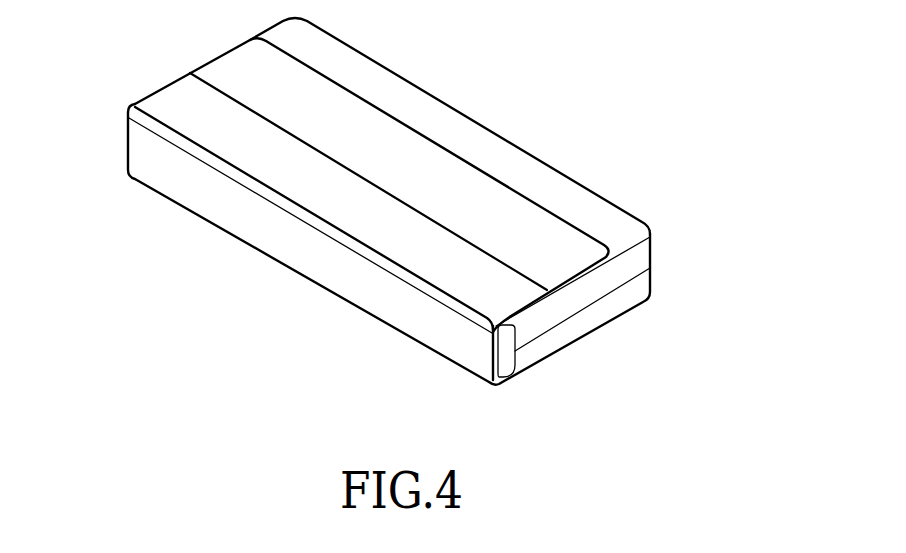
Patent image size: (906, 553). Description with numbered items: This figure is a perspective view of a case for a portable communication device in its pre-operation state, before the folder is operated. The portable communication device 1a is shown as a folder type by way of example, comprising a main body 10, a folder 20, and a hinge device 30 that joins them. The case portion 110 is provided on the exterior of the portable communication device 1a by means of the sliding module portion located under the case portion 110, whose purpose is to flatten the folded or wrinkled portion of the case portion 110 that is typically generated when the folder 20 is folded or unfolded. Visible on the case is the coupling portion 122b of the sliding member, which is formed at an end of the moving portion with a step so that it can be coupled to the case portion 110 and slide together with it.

The portable communication device 1a is at (418, 217).
The main body 10 is at (638, 292).
The folder 20 is at (638, 260).
The hinge device 30 is at (505, 355).
The case portion 110 is at (157, 87).
The coupling portion 122b is at (432, 150).